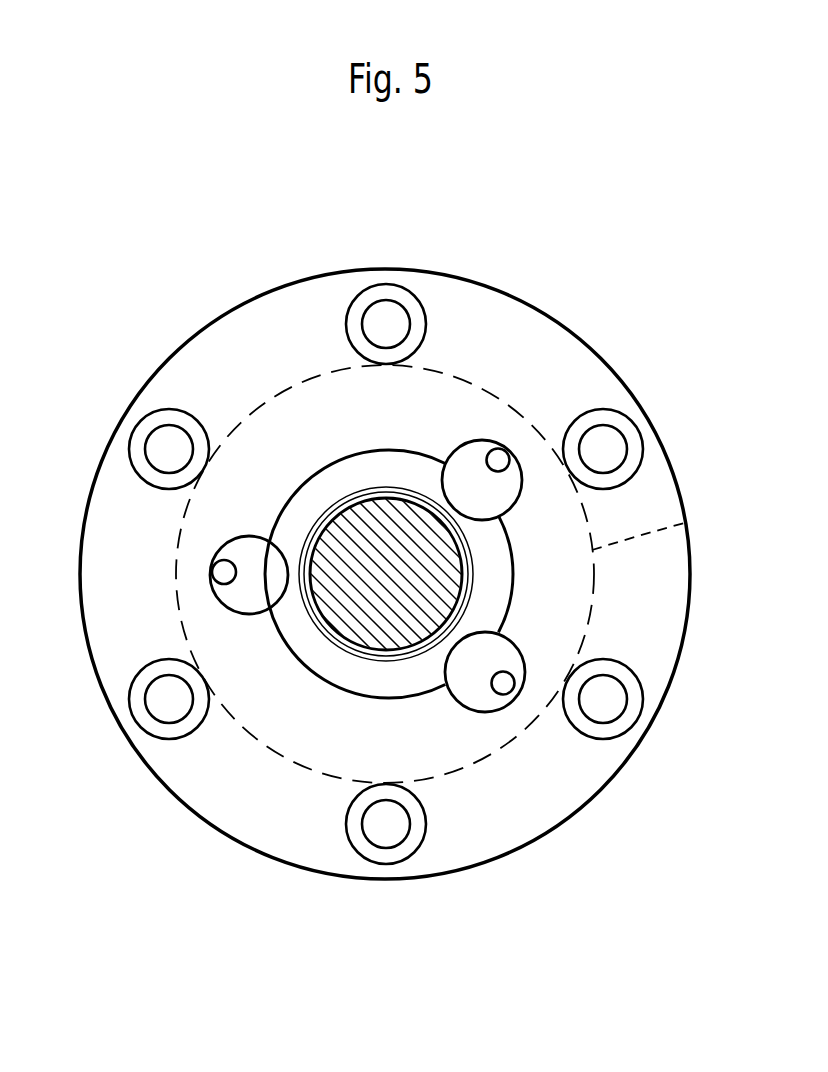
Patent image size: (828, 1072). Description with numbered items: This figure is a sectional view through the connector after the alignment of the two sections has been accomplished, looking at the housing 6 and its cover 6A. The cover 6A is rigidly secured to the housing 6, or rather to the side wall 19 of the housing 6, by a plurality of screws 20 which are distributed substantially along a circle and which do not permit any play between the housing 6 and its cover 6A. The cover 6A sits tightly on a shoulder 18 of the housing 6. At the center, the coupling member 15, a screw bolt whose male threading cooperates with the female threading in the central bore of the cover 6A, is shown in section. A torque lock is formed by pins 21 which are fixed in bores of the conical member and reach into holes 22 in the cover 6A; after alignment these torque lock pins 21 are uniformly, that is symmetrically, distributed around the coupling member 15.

The housing 6 is at (416, 574).
The cover 6A is at (651, 481).
The coupling member 15 is at (367, 630).
The shoulder 18 is at (690, 522).
The side wall 19 is at (578, 597).
The screws 20 is at (402, 302).
The torque lock pins 21 is at (224, 568).
The holes 22 is at (470, 457).